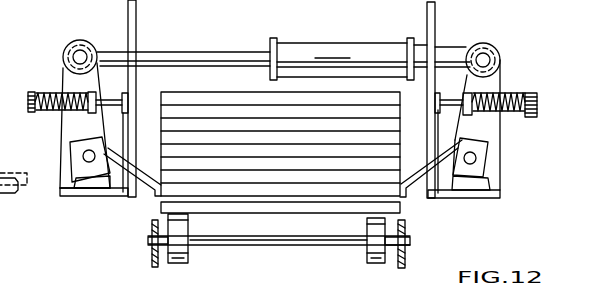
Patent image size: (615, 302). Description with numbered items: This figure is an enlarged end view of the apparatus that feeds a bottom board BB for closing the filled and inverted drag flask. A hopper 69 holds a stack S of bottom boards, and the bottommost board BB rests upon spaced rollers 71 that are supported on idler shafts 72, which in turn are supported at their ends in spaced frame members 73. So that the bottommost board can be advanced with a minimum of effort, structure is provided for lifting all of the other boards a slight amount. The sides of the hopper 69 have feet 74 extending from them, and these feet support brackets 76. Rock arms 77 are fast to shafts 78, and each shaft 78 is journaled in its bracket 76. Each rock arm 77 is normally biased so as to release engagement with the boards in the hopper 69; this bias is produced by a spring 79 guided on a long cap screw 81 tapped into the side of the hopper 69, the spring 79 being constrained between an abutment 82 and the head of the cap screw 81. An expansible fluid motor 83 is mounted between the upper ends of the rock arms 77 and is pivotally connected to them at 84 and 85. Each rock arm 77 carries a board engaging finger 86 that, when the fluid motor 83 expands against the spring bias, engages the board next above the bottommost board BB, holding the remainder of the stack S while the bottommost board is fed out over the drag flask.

The hopper 69 is at (136, 14).
The rollers 71 is at (183, 263).
The idler shafts 72 is at (322, 248).
The frame members 73 is at (152, 266).
The feet 74 is at (95, 197).
The brackets 76 is at (82, 185).
The rock arms 77 is at (62, 135).
The shafts 78 is at (83, 156).
The spring 79 is at (56, 90).
The cap screws 81 is at (110, 100).
The abutment 82 is at (80, 50).
The expansible fluid motor 83 is at (345, 50).
The pivotal connection 84 is at (64, 56).
The pivotal connection 85 is at (490, 46).
The board engaging finger 86 is at (147, 165).
The stack S is at (218, 97).
The bottom board BB is at (243, 212).